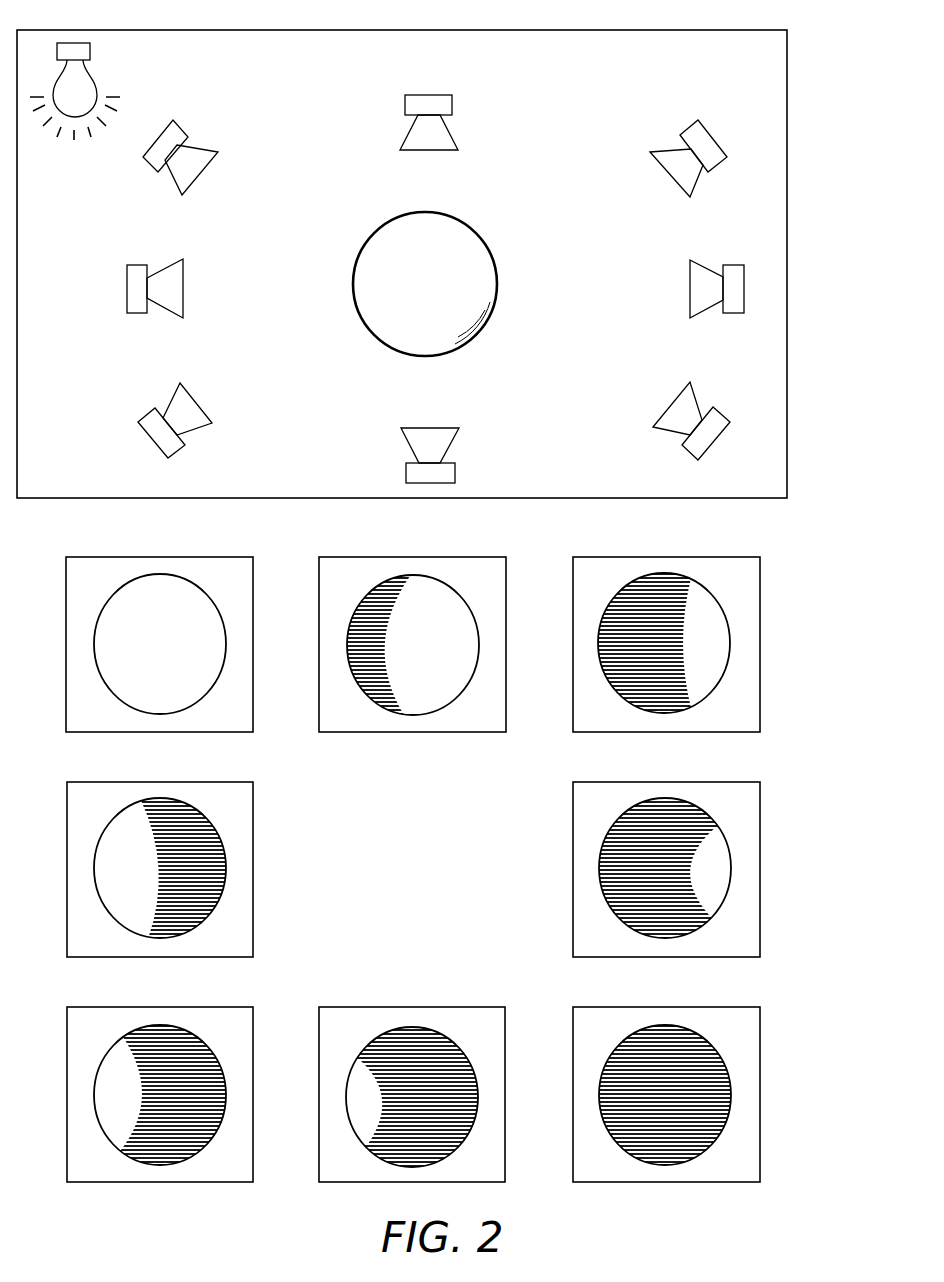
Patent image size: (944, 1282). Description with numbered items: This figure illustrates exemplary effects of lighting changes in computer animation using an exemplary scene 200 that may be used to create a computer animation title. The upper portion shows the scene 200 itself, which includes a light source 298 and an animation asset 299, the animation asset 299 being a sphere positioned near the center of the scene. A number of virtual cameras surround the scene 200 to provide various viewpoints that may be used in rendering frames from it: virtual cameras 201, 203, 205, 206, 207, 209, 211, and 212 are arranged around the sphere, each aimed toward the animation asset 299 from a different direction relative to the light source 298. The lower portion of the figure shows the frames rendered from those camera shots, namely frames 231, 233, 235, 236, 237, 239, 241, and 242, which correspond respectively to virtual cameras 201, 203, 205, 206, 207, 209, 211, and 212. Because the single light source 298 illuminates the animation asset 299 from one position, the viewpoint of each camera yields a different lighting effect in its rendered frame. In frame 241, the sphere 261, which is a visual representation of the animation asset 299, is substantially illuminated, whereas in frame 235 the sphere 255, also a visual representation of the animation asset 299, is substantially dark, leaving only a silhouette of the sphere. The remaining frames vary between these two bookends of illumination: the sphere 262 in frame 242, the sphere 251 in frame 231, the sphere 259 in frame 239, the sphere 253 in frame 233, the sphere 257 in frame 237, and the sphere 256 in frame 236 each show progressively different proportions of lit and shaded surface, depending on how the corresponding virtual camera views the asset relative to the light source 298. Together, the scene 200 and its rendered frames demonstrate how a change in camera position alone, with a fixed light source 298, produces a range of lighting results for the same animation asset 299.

The scene 200 is at (793, 102).
The light source 298 is at (90, 50).
The virtual camera 211 is at (181, 128).
The virtual camera 212 is at (452, 105).
The virtual camera 201 is at (668, 173).
The animation asset 299 is at (486, 246).
The virtual camera 209 is at (183, 289).
The virtual camera 203 is at (690, 289).
The virtual camera 207 is at (212, 423).
The virtual camera 206 is at (428, 427).
The virtual camera 205 is at (657, 423).
The frame 241 is at (238, 557).
The sphere 261 is at (94, 645).
The frame 242 is at (491, 557).
The sphere 262 is at (415, 715).
The frame 231 is at (745, 557).
The sphere 251 is at (730, 643).
The frame 239 is at (238, 782).
The sphere 259 is at (94, 870).
The frame 233 is at (745, 782).
The sphere 253 is at (731, 868).
The frame 237 is at (238, 1007).
The sphere 257 is at (94, 1097).
The frame 236 is at (491, 1007).
The sphere 256 is at (411, 1027).
The frame 235 is at (745, 1007).
The sphere 255 is at (731, 1095).